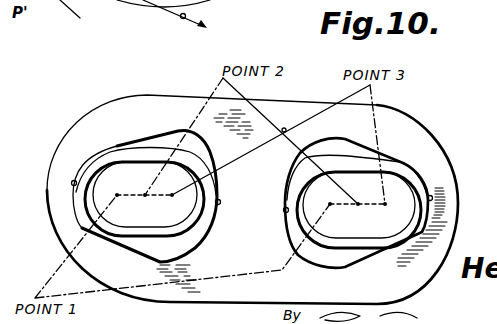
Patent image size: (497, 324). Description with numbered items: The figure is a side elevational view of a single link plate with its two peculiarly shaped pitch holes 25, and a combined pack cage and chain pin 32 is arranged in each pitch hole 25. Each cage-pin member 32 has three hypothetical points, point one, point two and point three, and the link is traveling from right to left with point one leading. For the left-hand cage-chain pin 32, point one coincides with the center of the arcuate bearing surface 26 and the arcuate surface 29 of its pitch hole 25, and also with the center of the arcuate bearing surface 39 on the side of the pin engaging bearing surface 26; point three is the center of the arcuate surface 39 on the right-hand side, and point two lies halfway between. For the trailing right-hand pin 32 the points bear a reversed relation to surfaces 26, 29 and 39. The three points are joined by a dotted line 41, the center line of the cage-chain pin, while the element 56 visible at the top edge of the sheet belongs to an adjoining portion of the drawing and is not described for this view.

The pitch hole 25 is at (157, 142).
The arcuate bearing surface 26 is at (67, 200).
The arcuate surface 29 is at (210, 240).
The combined pack cage and chain pin 32 is at (126, 235).
The arcuate bearing surface 39 is at (72, 183).
The dotted line 41 is at (156, 200).
The pivot pin 56 is at (203, 25).